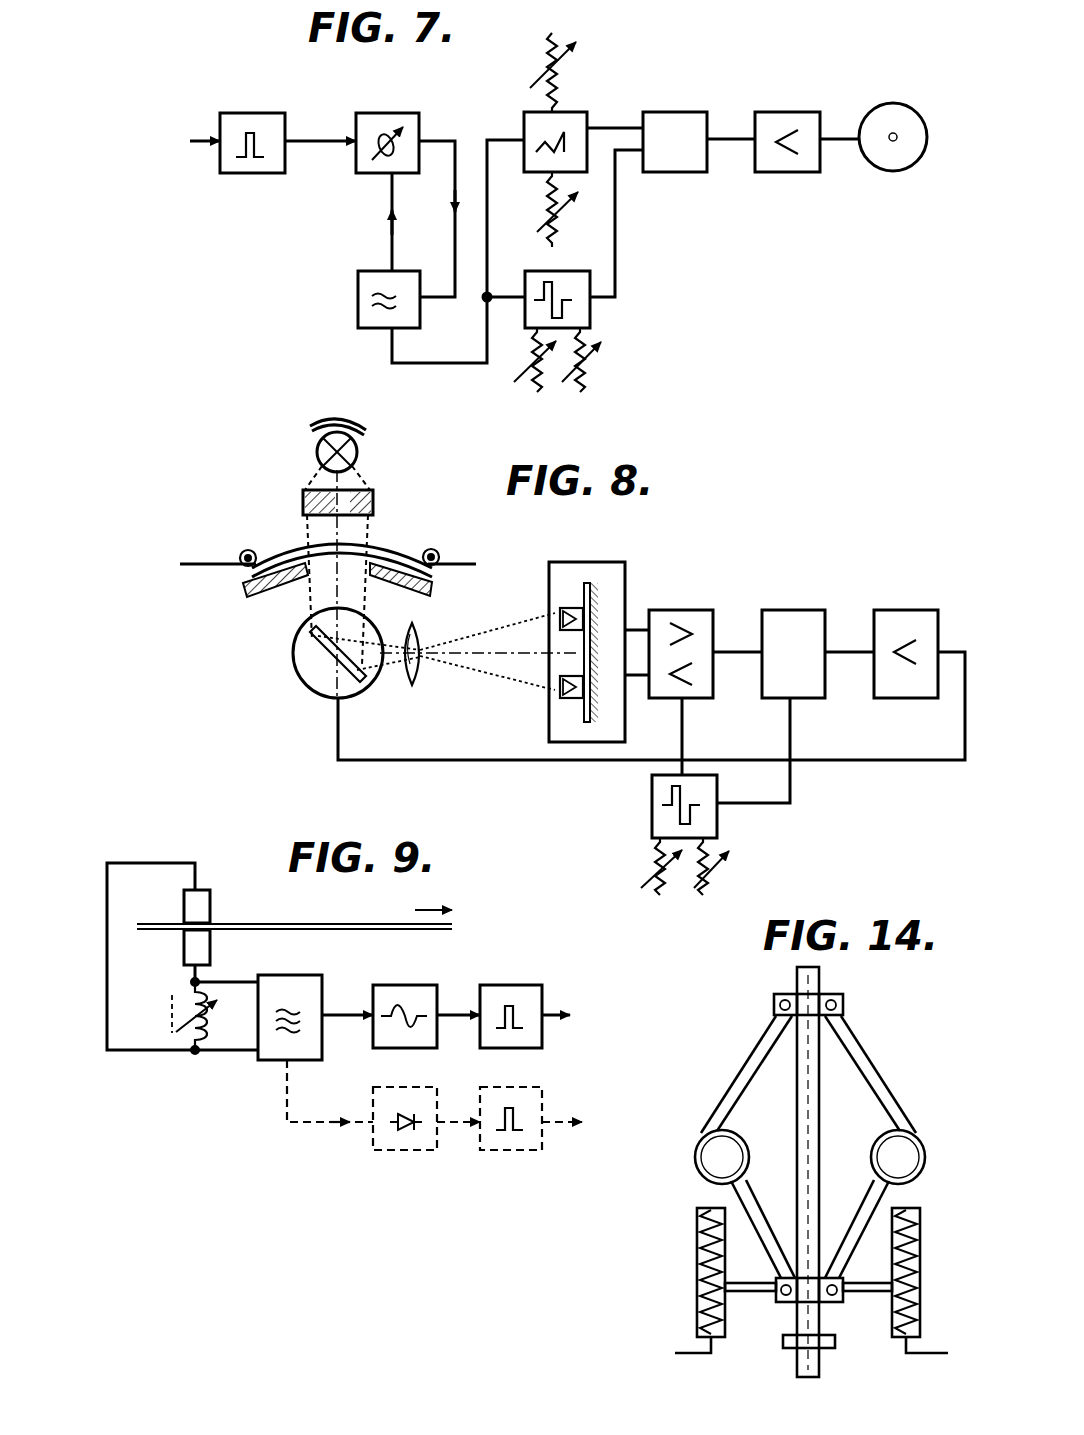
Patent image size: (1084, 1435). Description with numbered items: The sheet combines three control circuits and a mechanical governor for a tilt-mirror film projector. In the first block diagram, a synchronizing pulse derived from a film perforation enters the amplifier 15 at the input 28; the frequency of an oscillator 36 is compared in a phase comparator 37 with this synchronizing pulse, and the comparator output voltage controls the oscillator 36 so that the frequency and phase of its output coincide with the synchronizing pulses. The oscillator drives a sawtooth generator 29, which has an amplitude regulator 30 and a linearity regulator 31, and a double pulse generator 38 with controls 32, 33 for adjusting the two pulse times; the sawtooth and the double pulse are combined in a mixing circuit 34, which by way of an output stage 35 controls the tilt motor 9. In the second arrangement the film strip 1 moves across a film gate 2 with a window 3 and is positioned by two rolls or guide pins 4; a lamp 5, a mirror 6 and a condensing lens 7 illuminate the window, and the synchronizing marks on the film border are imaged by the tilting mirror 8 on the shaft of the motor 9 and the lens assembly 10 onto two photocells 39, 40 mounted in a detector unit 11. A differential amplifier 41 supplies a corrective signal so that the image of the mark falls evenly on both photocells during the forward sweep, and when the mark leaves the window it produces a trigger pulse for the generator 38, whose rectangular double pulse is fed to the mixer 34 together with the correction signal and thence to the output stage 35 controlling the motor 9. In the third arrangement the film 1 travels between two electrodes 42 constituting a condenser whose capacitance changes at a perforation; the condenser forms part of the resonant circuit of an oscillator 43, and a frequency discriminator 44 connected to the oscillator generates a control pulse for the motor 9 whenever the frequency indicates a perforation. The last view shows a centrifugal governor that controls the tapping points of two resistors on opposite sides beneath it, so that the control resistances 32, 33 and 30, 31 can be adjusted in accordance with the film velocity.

In FIG. 8, the film strip 1 is at (192, 561).
In FIG. 9, the film strip 1 is at (393, 918).
In FIG. 8, the film gate 2 is at (262, 597).
In FIG. 8, the window 3 is at (316, 587).
In FIG. 8, the rolls or guide pins 4 is at (250, 552).
In FIG. 8, the lamp 5 is at (316, 442).
In FIG. 8, the mirror 6 is at (334, 412).
In FIG. 8, the condensing lens 7 is at (306, 491).
In FIG. 8, the tilting mirror 8 is at (310, 649).
In FIG. 7, the tilt motor 9 is at (898, 110).
In FIG. 8, the tilt motor 9 is at (310, 680).
In FIG. 8, the lens assembly 10 is at (404, 690).
In FIG. 8, the photodetector unit 11 is at (578, 721).
In FIG. 7, the amplifier 15 is at (270, 112).
In FIG. 7, the input 28 is at (188, 142).
In FIG. 7, the sawtooth generator 29 is at (575, 111).
In FIG. 7, the amplitude regulator 30 is at (538, 60).
In FIG. 7, the linearity regulator 31 is at (560, 222).
In FIG. 7, the control 32 is at (540, 392).
In FIG. 8, the control 32 is at (654, 867).
In FIG. 7, the control 33 is at (582, 392).
In FIG. 8, the control 33 is at (712, 884).
In FIG. 7, the mixing circuit 34 is at (675, 111).
In FIG. 8, the mixing circuit 34 is at (787, 609).
In FIG. 7, the output stage 35 is at (783, 111).
In FIG. 8, the output stage 35 is at (918, 591).
In FIG. 7, the oscillator 36 is at (408, 270).
In FIG. 7, the phase comparator 37 is at (393, 112).
In FIG. 7, the double pulse generator 38 is at (582, 313).
In FIG. 8, the double pulse generator 38 is at (712, 783).
In FIG. 8, the photocell 39 is at (554, 610).
In FIG. 8, the photocell 40 is at (556, 693).
In FIG. 8, the differential amplifier 41 is at (690, 608).
In FIG. 9, the electrodes 42 is at (204, 905).
In FIG. 9, the oscillator 43 is at (300, 975).
In FIG. 9, the frequency discriminator 44 is at (413, 985).